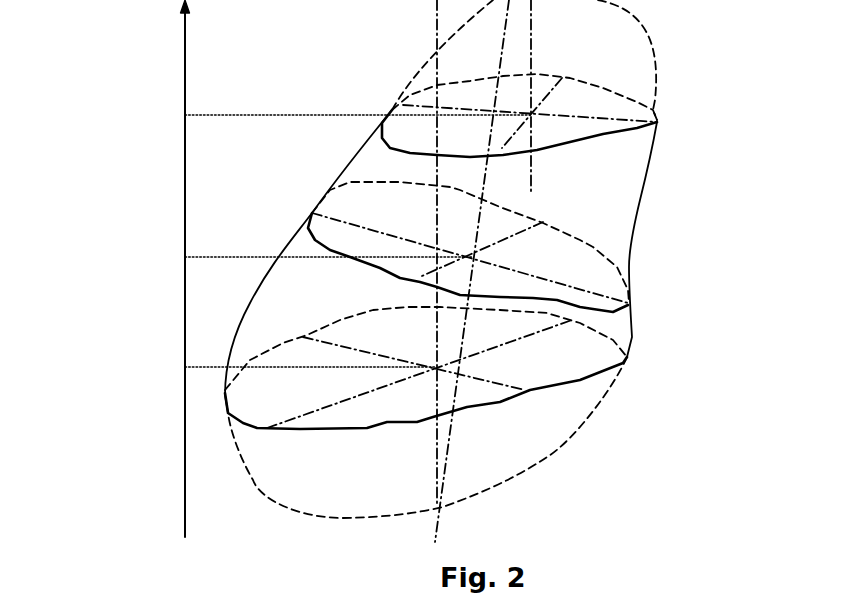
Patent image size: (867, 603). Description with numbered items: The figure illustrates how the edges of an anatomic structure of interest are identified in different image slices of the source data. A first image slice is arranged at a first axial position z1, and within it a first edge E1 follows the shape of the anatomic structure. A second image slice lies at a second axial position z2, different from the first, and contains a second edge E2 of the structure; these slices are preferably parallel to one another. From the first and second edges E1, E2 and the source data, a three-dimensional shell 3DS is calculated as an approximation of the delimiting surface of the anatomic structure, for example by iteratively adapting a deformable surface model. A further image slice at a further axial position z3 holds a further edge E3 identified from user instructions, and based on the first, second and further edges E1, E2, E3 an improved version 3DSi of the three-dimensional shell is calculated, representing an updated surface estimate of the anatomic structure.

The first axial position z1 is at (291, 364).
The second axial position z2 is at (309, 254).
The further axial position z3 is at (338, 112).
The three-dimensional shell 3DS is at (273, 307).
The improved version of the three-dimensional shell 3DSi is at (367, 166).
The first edge E1 is at (473, 381).
The second edge E2 is at (533, 287).
The further edge E3 is at (582, 130).